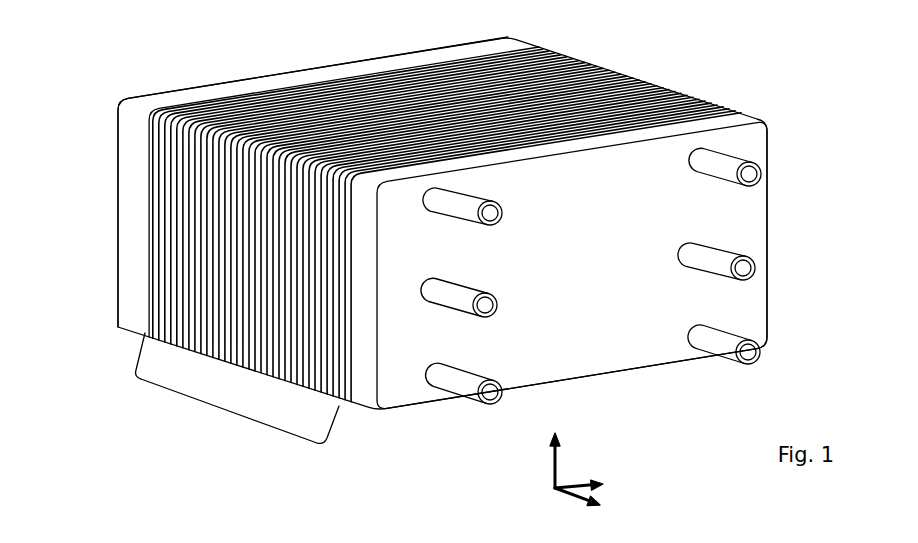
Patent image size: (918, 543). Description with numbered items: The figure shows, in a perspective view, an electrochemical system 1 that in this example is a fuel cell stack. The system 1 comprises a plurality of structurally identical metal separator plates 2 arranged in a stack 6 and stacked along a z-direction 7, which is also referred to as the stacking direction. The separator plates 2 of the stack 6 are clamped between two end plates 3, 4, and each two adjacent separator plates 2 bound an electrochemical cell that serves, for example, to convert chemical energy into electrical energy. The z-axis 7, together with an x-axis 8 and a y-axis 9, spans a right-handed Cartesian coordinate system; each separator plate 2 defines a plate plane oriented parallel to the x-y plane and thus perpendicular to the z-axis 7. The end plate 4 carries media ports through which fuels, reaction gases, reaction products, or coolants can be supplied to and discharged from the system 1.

The electrochemical system 1 is at (616, 399).
The separator plates 2 is at (652, 92).
The end plate 3 is at (243, 88).
The end plate 4 is at (402, 393).
The stack 6 is at (219, 408).
The z-direction 7 is at (567, 496).
The x-axis 8 is at (577, 484).
The y-axis 9 is at (555, 466).